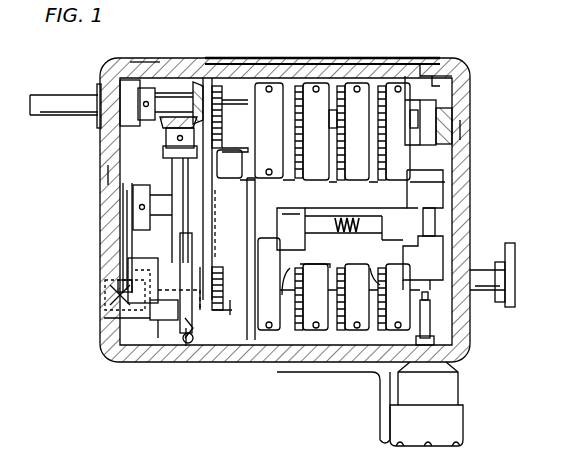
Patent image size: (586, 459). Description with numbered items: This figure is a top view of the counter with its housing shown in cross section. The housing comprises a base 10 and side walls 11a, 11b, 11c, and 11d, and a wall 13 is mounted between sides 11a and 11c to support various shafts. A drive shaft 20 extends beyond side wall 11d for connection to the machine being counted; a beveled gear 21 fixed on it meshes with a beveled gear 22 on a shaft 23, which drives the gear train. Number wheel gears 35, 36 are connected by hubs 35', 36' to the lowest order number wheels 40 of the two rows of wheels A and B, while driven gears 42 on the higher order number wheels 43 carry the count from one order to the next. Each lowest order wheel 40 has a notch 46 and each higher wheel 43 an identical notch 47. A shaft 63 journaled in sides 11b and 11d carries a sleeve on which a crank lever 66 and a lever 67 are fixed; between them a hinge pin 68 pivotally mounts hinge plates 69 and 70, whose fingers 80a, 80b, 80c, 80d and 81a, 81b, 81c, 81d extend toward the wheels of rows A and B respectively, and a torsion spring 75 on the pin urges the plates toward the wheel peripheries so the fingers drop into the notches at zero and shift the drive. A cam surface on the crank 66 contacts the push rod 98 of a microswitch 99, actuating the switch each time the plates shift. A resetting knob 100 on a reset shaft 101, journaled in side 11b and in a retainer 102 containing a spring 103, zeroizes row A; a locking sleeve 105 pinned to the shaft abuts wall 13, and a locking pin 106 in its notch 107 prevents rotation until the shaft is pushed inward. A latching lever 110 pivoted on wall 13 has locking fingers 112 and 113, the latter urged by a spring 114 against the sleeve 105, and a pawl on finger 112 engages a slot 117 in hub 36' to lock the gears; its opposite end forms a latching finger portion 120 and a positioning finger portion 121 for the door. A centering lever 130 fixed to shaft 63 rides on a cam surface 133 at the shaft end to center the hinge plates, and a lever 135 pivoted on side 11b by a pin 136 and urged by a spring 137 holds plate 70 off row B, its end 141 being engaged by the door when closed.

The base 10 is at (100, 348).
The side wall 11a is at (138, 62).
The side wall 11b is at (463, 132).
The side wall 11c is at (381, 372).
The side wall 11d is at (110, 174).
The wall 13 is at (196, 346).
The drive shaft 20 is at (38, 95).
The beveled gear 21 is at (190, 78).
The beveled gear 22 is at (180, 128).
The shaft 23 is at (175, 200).
The number wheel gear 35 is at (213, 90).
The hub 35' is at (235, 81).
The number wheel gear 36 is at (211, 326).
The hub 36' is at (216, 334).
The lowest order number wheel 40 is at (262, 81).
The driven gear 42 is at (298, 84).
The number wheel of higher order 43 is at (316, 90).
The notch 46 is at (268, 163).
The notch 47 is at (334, 108).
The shaft 63 is at (165, 206).
The crank lever 66 is at (435, 212).
The lever 67 is at (247, 186).
The hinge pin 68 is at (372, 216).
The hinge plate 69 is at (438, 238).
The hinge plate 70 is at (440, 180).
The torsion spring 75 is at (344, 234).
The finger 80a is at (293, 273).
The finger 80b is at (315, 262).
The finger 80c is at (384, 268).
The finger 80d is at (430, 275).
The finger 81a is at (291, 220).
The finger 81b is at (343, 203).
The finger 81c is at (343, 215).
The finger 81d is at (445, 160).
The push rod 98 is at (432, 318).
The microswitch 99 is at (452, 384).
The resetting knob 100 is at (512, 250).
The reset shaft 101 is at (490, 284).
The retainer 102 is at (104, 318).
The spring 103 is at (110, 295).
The locking sleeve 105 is at (183, 275).
The locking pin 106 is at (178, 318).
The notch 107 is at (165, 310).
The latching lever 110 is at (150, 360).
The locking finger 112 is at (210, 261).
The locking finger 113 is at (165, 352).
The spring 114 is at (176, 356).
The slot 117 is at (236, 312).
The latching finger portion 120 is at (228, 189).
The positioning finger portion 121 is at (232, 140).
The centering lever 130 is at (125, 262).
The cam surface 133 is at (118, 280).
The lever 135 is at (450, 72).
The pin 136 is at (456, 125).
The spring 137 is at (452, 108).
The end of lever 141 is at (432, 72).
The row of number wheels A is at (351, 340).
The row of number wheels B is at (368, 82).